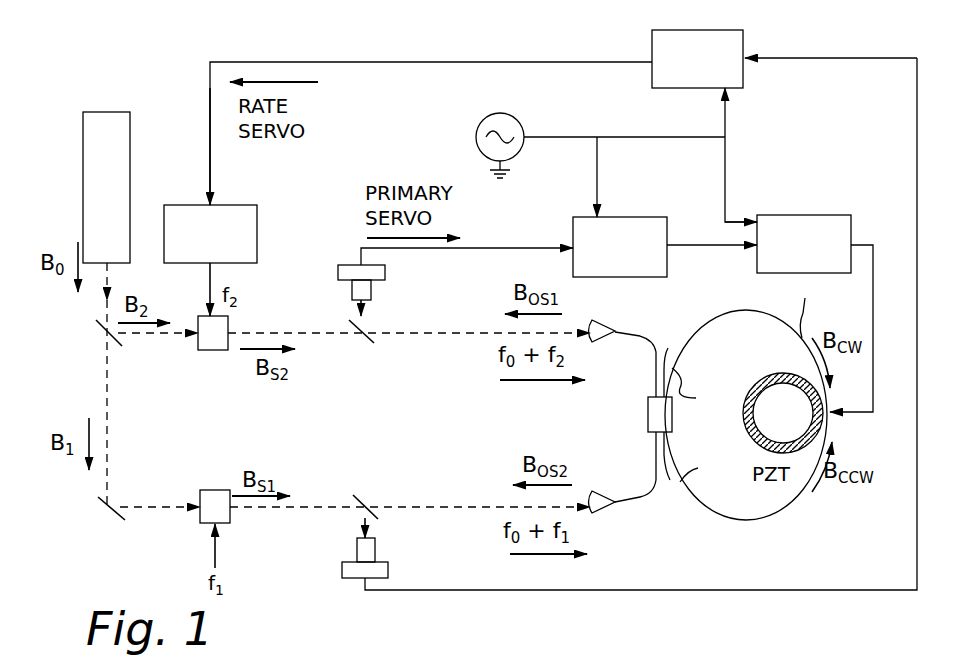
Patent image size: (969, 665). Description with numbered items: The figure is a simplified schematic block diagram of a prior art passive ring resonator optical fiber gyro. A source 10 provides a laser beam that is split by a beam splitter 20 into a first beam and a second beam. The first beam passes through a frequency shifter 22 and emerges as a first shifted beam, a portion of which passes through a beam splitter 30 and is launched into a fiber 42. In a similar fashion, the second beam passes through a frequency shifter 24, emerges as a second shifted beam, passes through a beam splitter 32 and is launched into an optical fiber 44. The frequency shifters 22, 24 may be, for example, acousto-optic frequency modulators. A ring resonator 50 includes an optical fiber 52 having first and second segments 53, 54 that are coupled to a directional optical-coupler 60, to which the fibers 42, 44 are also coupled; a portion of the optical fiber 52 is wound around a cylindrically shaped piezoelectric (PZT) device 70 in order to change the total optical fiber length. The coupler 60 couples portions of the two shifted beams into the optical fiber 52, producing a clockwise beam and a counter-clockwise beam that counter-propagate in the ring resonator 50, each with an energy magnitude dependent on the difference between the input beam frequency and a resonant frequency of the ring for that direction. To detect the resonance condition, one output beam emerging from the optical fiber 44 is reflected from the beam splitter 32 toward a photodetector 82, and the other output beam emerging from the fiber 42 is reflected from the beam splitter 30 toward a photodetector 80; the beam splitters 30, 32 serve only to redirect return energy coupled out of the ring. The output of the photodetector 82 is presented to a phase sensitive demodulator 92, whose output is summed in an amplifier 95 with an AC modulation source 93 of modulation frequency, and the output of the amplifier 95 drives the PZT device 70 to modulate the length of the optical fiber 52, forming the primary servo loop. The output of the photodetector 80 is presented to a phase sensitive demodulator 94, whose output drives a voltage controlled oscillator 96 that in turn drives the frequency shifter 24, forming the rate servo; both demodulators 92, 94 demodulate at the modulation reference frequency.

The source 10 is at (83, 121).
The beam splitter 20 is at (100, 332).
The frequency shifter 22 is at (200, 522).
The frequency shifter 24 is at (210, 350).
The beam splitter 30 is at (368, 494).
The beam splitter 32 is at (356, 338).
The fiber 42 is at (668, 492).
The optical fiber 44 is at (657, 348).
The ring resonator 50 is at (741, 366).
The optical fiber 52 is at (804, 307).
The first segment 53 is at (699, 394).
The second segment 54 is at (706, 470).
The directional optical-coupler 60 is at (648, 410).
The piezoelectric (PZT) device 70 is at (770, 446).
The photodetector 80 is at (388, 570).
The photodetector 82 is at (342, 265).
The phase sensitive demodulator 92 is at (573, 226).
The AC modulation source 93 is at (486, 118).
The phase sensitive demodulator 94 is at (743, 40).
The amplifier 95 is at (851, 227).
The voltage controlled oscillator (VCO) 96 is at (186, 205).